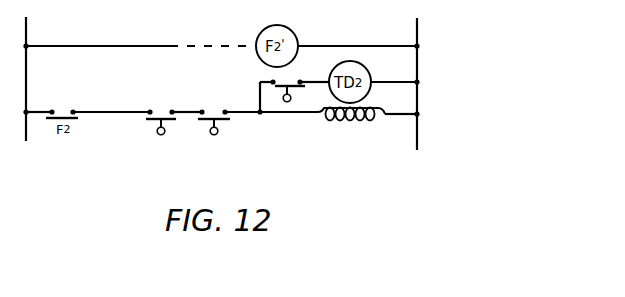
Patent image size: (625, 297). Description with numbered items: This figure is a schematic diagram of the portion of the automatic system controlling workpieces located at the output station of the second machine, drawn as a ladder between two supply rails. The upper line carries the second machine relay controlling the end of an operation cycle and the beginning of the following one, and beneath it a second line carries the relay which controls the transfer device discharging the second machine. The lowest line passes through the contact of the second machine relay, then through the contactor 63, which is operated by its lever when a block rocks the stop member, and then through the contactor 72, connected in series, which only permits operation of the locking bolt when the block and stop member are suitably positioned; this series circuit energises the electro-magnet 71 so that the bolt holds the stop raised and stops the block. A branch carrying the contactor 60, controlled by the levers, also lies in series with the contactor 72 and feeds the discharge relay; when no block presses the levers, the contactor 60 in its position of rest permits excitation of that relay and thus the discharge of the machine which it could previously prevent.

The contactor 63 is at (158, 134).
The contactor 72 is at (216, 135).
The contactor 60 is at (285, 102).
The electro-magnet 71 is at (365, 118).